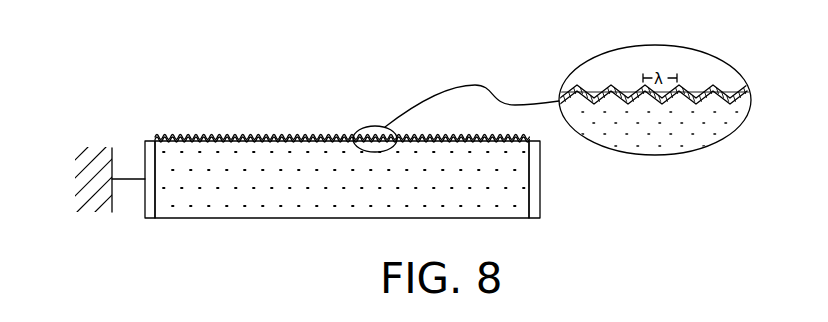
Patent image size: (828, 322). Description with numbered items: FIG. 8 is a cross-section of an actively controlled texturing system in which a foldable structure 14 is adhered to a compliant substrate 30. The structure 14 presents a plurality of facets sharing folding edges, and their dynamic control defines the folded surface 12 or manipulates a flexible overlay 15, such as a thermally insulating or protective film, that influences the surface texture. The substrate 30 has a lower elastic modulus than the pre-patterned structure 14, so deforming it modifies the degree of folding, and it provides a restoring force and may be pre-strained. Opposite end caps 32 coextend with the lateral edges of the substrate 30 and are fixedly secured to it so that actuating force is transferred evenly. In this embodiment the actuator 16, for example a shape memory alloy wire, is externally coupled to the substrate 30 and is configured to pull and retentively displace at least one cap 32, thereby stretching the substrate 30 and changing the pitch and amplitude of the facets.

The folded surface 12 is at (203, 135).
The structure 14 is at (698, 92).
The flexible overlay 15 is at (590, 92).
The actuator 16 is at (130, 179).
The substrate 30 is at (222, 186).
The end cap 32 is at (540, 182).